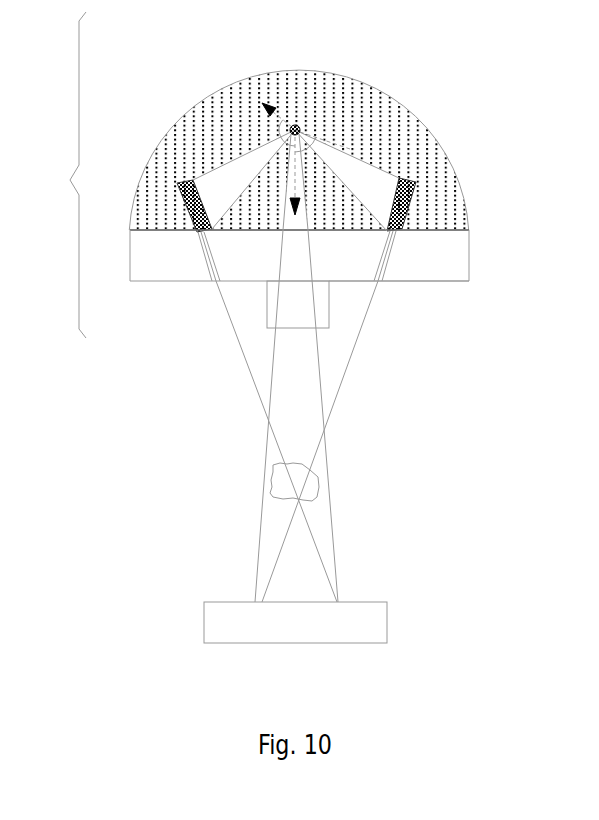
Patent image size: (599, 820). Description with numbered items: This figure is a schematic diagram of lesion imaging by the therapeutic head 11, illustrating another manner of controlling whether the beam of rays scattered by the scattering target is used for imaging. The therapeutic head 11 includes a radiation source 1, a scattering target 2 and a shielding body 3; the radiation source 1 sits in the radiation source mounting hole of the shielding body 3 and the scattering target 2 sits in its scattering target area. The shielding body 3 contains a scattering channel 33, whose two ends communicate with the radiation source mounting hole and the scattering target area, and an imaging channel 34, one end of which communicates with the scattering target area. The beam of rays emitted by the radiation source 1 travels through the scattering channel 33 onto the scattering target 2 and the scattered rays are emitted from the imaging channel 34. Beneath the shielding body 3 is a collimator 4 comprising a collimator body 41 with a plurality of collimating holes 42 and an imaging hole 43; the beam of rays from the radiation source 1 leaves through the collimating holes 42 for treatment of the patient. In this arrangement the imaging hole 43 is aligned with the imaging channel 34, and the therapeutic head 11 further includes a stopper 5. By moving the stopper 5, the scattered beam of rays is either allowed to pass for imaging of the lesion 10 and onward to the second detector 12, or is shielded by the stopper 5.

The radiation source 1 is at (412, 205).
The scattering target 2 is at (298, 124).
The shielding body 3 is at (430, 124).
The collimator 4 is at (433, 257).
The stopper 5 is at (293, 306).
The lesion 10 is at (335, 492).
The therapeutic head 11 is at (55, 190).
The second detector 12 is at (343, 620).
The scattering channel 33 is at (245, 160).
The imaging channel 34 is at (296, 189).
The collimator body 41 is at (437, 268).
The collimating hole 42 is at (212, 270).
The imaging hole 43 is at (302, 267).